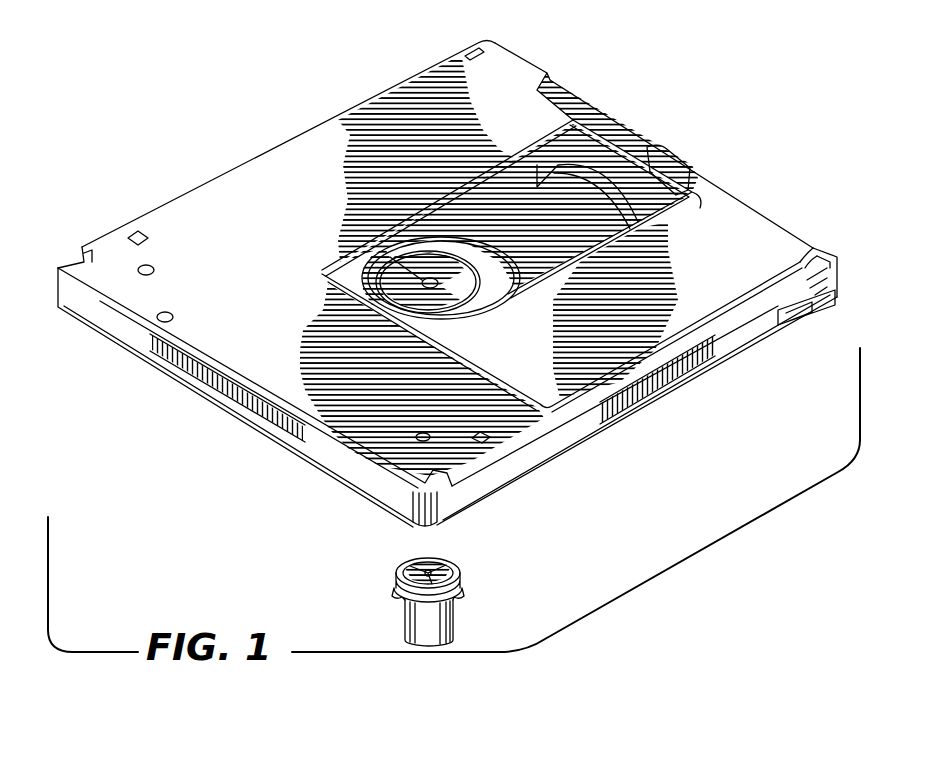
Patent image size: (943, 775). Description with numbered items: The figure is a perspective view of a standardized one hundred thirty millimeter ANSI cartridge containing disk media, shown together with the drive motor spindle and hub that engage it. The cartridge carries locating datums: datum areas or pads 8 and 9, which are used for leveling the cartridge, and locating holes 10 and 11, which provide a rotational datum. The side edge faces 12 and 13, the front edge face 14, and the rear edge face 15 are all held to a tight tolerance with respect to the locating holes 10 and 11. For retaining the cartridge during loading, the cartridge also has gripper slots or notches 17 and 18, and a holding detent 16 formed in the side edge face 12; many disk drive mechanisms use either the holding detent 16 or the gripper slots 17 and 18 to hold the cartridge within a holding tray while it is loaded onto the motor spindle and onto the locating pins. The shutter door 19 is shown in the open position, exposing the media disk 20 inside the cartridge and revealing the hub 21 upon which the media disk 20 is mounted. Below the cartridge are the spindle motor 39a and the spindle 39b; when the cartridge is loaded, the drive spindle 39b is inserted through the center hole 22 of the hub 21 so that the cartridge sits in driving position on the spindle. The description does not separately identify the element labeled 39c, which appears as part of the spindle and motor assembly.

The datum pad 8 is at (482, 56).
The datum pad 9 is at (830, 258).
The locating hole 10 is at (480, 436).
The locating hole 11 is at (136, 231).
The side edge face 12 is at (650, 400).
The side edge face 13 is at (290, 140).
The front edge face 14 is at (757, 203).
The rear edge face 15 is at (380, 490).
The holding detent 16 is at (805, 308).
The gripper slot 17 is at (437, 506).
The gripper slot 18 is at (81, 250).
The shutter door 19 is at (797, 245).
The media disk 20 is at (537, 187).
The hub 21 is at (368, 258).
The center hole 22 is at (436, 282).
The spindle motor 39a is at (455, 620).
The spindle 39b is at (460, 565).
The hub flange 39c is at (462, 576).